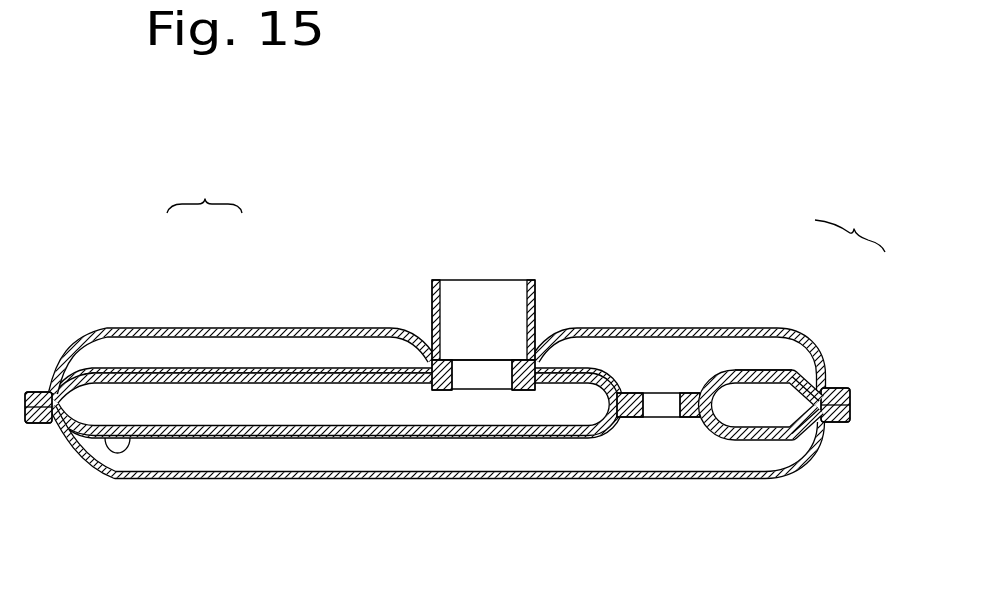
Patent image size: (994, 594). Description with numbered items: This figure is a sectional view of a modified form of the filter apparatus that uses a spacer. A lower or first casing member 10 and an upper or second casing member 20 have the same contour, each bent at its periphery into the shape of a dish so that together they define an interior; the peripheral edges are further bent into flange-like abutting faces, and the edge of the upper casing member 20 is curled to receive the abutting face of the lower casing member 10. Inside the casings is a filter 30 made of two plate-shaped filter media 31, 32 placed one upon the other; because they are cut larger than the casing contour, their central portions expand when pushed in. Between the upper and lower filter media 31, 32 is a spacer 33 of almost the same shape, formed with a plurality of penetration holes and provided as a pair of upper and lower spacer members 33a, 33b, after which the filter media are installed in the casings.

The first casing member 10 is at (318, 328).
The second casing member 20 is at (326, 479).
The filter 30 is at (204, 189).
The filter medium 31 is at (222, 370).
The filter medium 32 is at (141, 415).
The spacer 33 is at (795, 317).
The upper spacer member 33a is at (747, 388).
The lower spacer member 33b is at (792, 420).